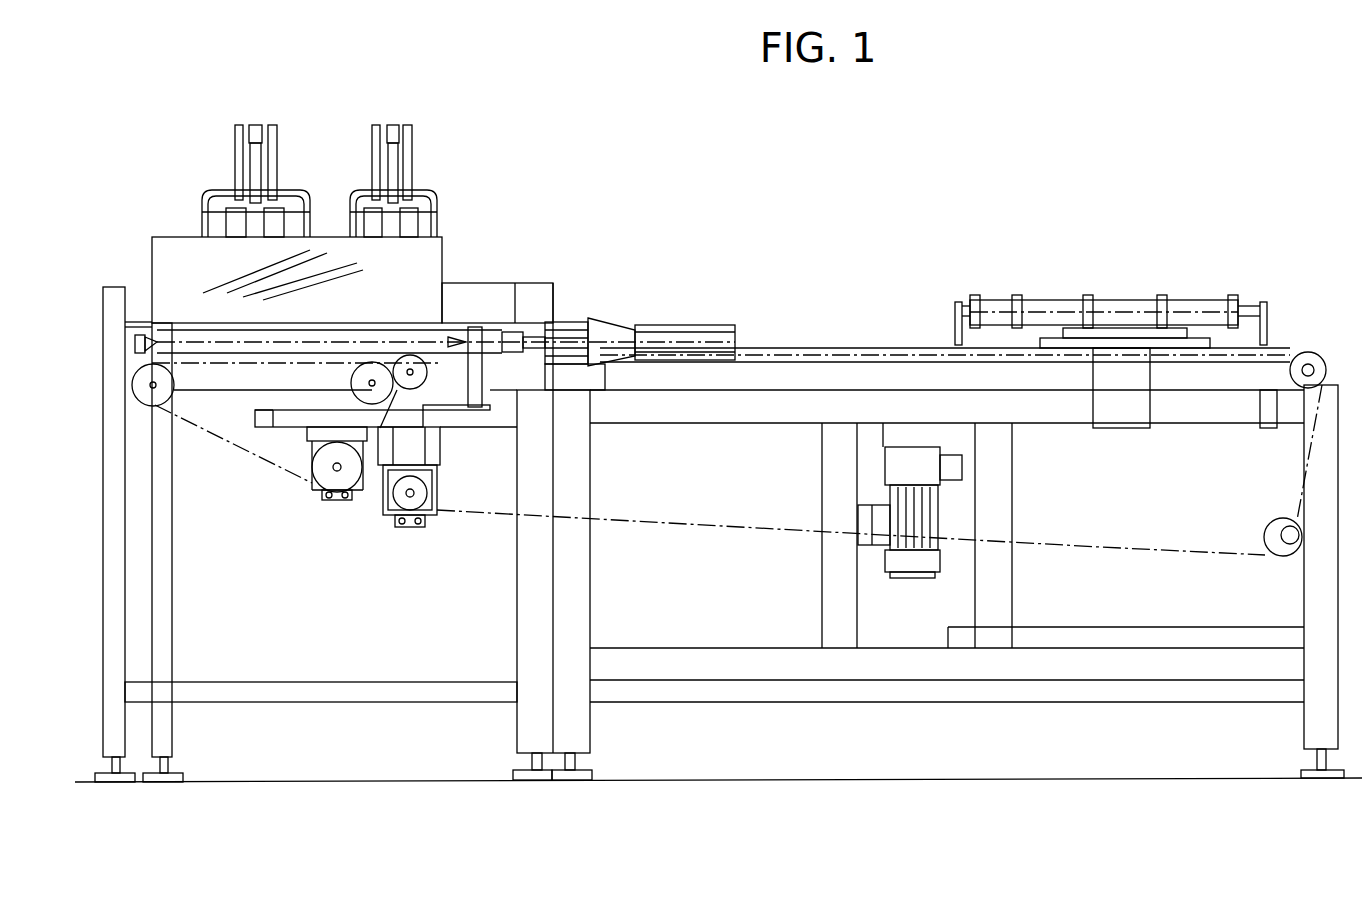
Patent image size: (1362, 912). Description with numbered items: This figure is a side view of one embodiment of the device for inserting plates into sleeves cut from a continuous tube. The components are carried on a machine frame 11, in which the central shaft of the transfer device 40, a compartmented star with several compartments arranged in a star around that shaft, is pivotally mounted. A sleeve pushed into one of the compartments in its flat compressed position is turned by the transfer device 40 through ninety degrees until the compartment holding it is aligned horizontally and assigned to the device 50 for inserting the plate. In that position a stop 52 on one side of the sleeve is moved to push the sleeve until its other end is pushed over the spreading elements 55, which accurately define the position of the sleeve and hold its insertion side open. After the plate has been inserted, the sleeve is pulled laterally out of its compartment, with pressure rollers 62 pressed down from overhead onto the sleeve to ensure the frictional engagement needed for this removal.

The machine frame 11 is at (532, 702).
The transfer device 40 is at (451, 258).
The device for inserting the plate 50 is at (729, 455).
The stop 52 is at (150, 340).
The spreading elements 55 is at (452, 340).
The pressure rollers 62 is at (253, 232).